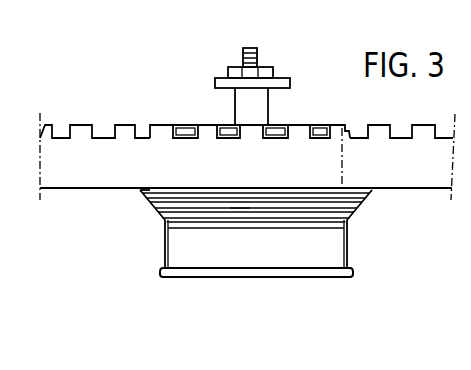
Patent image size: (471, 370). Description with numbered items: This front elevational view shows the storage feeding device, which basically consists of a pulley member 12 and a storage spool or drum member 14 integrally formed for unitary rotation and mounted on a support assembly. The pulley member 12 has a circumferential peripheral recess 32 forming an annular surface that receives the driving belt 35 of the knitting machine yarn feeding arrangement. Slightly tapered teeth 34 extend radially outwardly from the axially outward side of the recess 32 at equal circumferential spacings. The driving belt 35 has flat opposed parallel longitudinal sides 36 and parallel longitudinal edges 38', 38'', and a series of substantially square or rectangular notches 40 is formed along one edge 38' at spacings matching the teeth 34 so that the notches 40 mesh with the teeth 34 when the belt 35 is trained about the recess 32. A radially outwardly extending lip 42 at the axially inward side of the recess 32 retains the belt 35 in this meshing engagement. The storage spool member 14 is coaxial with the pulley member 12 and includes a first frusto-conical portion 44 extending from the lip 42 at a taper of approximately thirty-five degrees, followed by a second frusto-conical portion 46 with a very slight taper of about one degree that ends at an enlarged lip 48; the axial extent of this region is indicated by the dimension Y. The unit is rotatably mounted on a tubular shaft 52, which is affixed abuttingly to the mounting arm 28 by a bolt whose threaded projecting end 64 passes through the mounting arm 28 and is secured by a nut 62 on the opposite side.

The pulley member 12 is at (260, 134).
The storage spool member 14 is at (257, 247).
The mounting arm 28 is at (290, 83).
The circumferential peripheral recess 32 is at (343, 154).
The tapered teeth 34 is at (275, 123).
The driving belt 35 is at (427, 188).
The longitudinal sides 36 is at (100, 180).
The belt edge 38' is at (66, 103).
The longitudinal edge 38'' is at (86, 210).
The notches 40 is at (400, 125).
The lip 42 is at (358, 197).
The first frusto-conical portion 44 is at (150, 191).
The second frusto-conical portion 46 is at (335, 245).
The enlarged lip 48 is at (183, 268).
The tubular shaft 52 is at (235, 107).
The nut 62 is at (267, 65).
The threaded projecting end 64 is at (243, 56).
The dimension Y is at (238, 211).